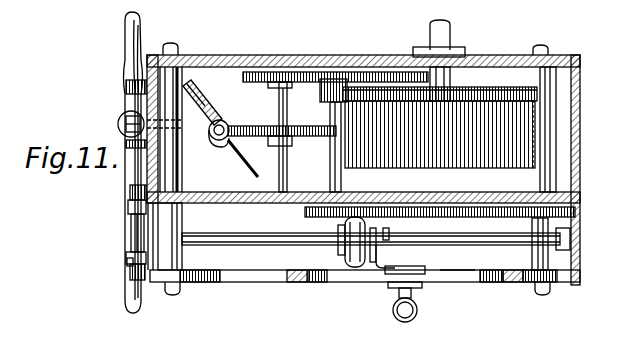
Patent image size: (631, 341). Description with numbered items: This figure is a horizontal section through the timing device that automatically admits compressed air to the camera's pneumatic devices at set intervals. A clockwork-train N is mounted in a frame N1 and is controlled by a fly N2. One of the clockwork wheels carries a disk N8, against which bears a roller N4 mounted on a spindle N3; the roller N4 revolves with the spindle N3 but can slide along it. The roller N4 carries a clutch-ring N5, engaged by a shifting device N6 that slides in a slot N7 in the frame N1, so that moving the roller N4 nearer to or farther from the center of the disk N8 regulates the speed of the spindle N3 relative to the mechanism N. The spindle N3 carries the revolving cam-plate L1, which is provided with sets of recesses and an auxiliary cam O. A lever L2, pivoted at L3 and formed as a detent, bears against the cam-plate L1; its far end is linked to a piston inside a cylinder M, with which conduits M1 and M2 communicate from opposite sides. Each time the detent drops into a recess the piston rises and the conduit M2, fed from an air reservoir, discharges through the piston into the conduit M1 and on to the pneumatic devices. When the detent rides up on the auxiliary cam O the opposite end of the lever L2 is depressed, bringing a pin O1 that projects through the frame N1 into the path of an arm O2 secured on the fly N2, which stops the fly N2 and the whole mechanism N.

The frame N1 is at (548, 52).
The clockwork-train N is at (415, 120).
The fly N2 is at (305, 132).
The arm O2 is at (208, 100).
The disk N8 is at (578, 212).
The spindle N3 is at (225, 238).
The roller N4 is at (355, 256).
The clutch-ring N5 is at (380, 233).
The shifting device N6 is at (402, 272).
The slot N7 is at (457, 275).
The conduit M1 is at (125, 36).
The pin O1 is at (150, 127).
The cylinder M is at (120, 124).
The lever L2 is at (130, 195).
The pivot L3 is at (130, 207).
The conduit M2 is at (128, 257).
The auxiliary cam O is at (128, 262).
The cam-plate L1 is at (136, 272).